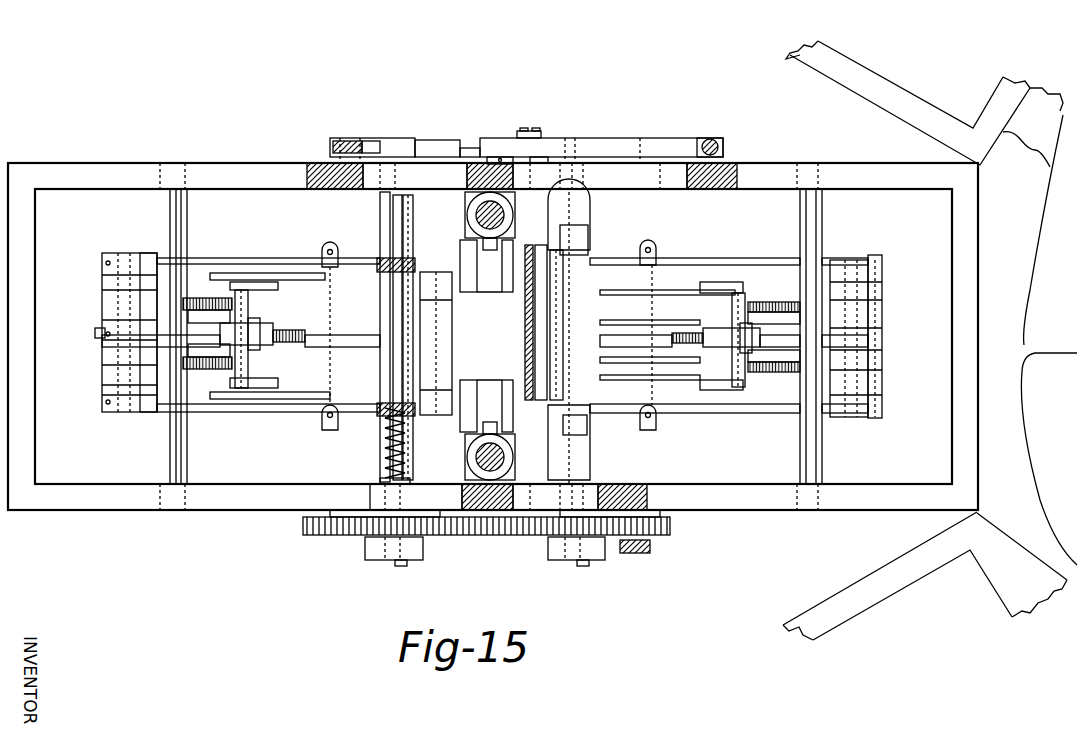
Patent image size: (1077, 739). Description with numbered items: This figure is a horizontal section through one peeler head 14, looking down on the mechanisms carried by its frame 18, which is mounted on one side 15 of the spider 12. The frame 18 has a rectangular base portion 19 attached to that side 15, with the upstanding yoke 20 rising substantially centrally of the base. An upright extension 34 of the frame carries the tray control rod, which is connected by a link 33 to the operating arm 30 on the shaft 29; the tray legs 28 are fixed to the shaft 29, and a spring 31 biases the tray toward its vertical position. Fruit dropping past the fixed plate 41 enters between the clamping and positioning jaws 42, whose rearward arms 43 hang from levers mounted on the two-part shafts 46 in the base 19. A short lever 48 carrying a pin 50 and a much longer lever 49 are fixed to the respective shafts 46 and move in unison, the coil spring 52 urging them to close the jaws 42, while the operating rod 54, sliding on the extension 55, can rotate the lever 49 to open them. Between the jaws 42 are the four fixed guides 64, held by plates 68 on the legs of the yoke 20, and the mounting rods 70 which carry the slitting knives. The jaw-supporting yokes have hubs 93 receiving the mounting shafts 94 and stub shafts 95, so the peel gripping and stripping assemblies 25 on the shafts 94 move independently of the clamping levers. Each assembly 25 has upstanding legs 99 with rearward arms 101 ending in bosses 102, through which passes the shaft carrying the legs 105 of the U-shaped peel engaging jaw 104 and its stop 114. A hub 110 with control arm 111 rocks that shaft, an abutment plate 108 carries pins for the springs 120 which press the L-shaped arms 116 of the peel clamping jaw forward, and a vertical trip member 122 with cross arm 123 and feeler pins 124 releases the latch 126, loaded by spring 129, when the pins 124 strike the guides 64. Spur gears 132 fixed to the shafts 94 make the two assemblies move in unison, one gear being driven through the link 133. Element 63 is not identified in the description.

The spider 12 is at (1018, 452).
The peeler head 14 is at (235, 134).
The side of the spider 15 is at (1050, 168).
The frame 18 is at (243, 521).
The base portion 19 is at (298, 490).
The yoke 20 is at (470, 175).
The peel gripping and stripping arm 25 is at (257, 249).
The leg 28 is at (398, 255).
The shaft 29 is at (385, 214).
The operating arm 30 is at (390, 138).
The spring 31 is at (383, 456).
The link 33 is at (332, 142).
The upright extension 34 is at (318, 163).
The fixed plate 41 is at (528, 262).
The clamping and positioning jaw 42 is at (440, 258).
The arm 43 is at (578, 236).
The shaft 46 is at (367, 202).
The lever 48 is at (430, 140).
The lever 49 is at (617, 137).
The pin 50 is at (497, 140).
The coil spring 52 is at (537, 131).
The operating rod 54 is at (725, 147).
The extension 55 is at (728, 190).
The gear 63 is at (530, 318).
The fixed guide 64 is at (507, 281).
The plate 68 is at (456, 189).
The mounting rod 70 is at (480, 212).
The hub 93 is at (378, 242).
The mounting shaft 94 is at (400, 567).
The stub shaft 95 is at (422, 138).
The upstanding leg 99 is at (690, 262).
The arm 101 is at (152, 290).
The boss 102 is at (110, 288).
The peel engaging jaw 104 is at (282, 251).
The leg 105 is at (235, 257).
The abutment plate 108 is at (150, 346).
The hub 110 is at (100, 331).
The control arm 111 is at (135, 320).
The stop 114 is at (215, 251).
The L-shaped arm 116 is at (350, 366).
The spring 120 is at (205, 300).
The vertical member 122 is at (306, 344).
The cross arm 123 is at (325, 425).
The feeler pin 124 is at (325, 243).
The latch 126 is at (258, 329).
The spring 129 is at (325, 330).
The spur gear 132 is at (315, 536).
The link 133 is at (650, 545).